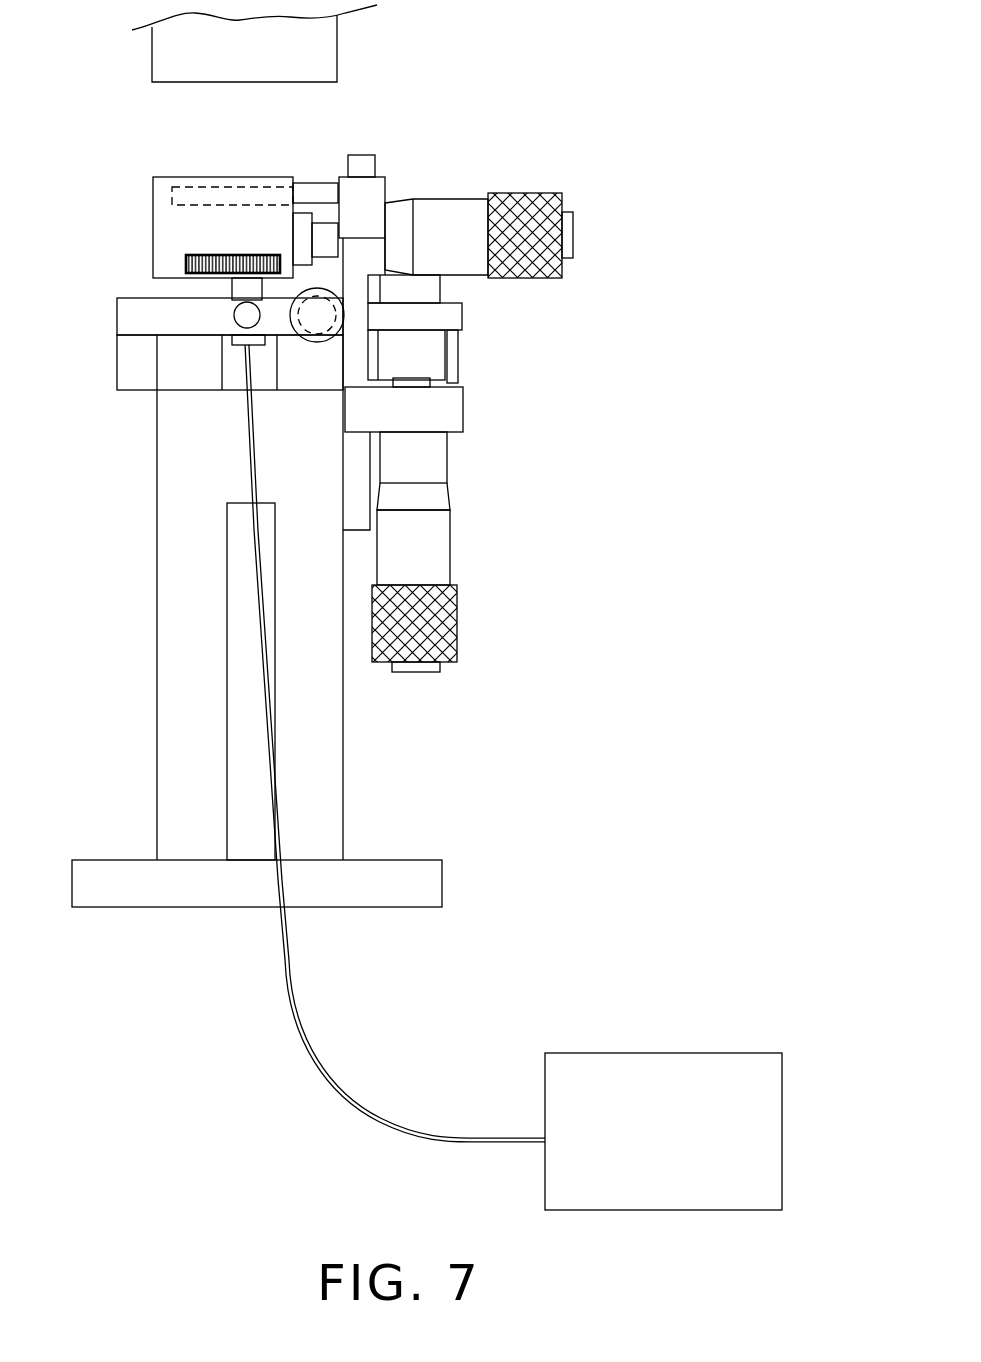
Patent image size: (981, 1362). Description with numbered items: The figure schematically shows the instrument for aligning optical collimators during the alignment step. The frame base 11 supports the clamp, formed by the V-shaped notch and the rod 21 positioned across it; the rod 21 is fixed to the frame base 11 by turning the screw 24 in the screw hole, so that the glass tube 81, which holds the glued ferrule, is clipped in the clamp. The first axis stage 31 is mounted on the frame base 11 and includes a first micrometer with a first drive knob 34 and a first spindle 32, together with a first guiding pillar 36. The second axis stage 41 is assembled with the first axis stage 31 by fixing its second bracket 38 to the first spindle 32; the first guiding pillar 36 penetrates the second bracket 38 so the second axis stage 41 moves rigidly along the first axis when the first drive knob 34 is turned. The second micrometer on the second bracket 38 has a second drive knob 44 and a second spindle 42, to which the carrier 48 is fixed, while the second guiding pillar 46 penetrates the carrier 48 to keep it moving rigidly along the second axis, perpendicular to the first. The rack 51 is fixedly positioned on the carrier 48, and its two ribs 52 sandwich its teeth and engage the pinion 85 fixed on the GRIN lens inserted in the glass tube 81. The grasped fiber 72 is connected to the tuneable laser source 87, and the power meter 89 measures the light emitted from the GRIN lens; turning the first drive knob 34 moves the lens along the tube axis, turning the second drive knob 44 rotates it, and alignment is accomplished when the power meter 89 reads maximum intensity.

The frame base 11 is at (157, 590).
The rod 21 is at (178, 335).
The screw 24 is at (313, 343).
The first axis stage 31 is at (468, 453).
The first spindle 32 is at (462, 390).
The first drive knob 34 is at (453, 562).
The first guiding pillar 36 is at (457, 370).
The second bracket 38 is at (462, 320).
The second axis stage 41 is at (437, 186).
The second spindle 42 is at (324, 222).
The second drive knob 44 is at (533, 193).
The second guiding pillar 46 is at (316, 182).
The carrier 48 is at (153, 193).
The rack 51 is at (186, 262).
The ribs 52 is at (198, 256).
The grasped fiber 72 is at (282, 852).
The glass tube 81 is at (232, 343).
The pinion 85 is at (243, 255).
The tuneable laser source 87 is at (650, 1053).
The power meter 89 is at (337, 52).